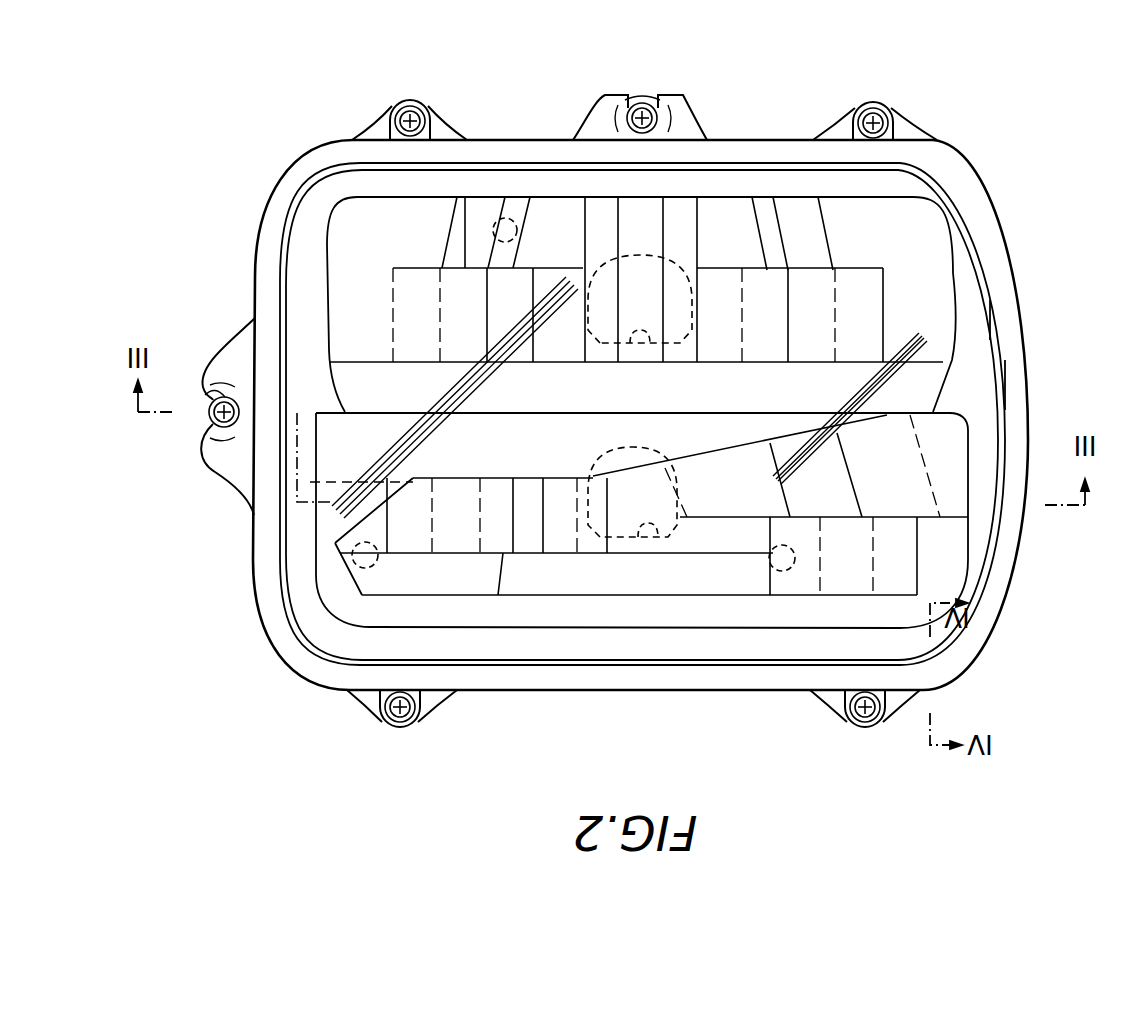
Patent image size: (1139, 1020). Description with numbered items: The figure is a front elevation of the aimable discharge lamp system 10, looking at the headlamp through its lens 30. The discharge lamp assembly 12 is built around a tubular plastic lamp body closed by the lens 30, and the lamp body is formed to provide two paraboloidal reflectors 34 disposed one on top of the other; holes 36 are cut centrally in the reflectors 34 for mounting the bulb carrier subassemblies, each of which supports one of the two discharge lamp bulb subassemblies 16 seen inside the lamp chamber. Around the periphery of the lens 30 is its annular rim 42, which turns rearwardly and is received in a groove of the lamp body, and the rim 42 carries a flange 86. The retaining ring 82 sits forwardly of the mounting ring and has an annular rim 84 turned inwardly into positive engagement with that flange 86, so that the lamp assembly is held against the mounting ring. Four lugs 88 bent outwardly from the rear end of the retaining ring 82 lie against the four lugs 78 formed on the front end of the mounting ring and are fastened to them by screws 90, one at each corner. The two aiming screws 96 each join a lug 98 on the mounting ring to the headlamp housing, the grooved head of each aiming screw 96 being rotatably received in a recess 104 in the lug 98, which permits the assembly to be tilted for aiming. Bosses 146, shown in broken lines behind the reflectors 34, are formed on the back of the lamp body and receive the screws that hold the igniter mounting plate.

The discharge lamp system 10 is at (250, 700).
The discharge lamp assembly 12 is at (307, 605).
The discharge lamp bulb subassemblies 16 is at (678, 267).
The lens 30 is at (940, 278).
The paraboloidal reflectors 34 is at (320, 248).
The holes 36 is at (650, 345).
The annular rim 42 is at (985, 318).
The lugs 78 is at (375, 130).
The retaining ring 82 is at (567, 692).
The annular rim 84 is at (643, 672).
The flange 86 is at (590, 130).
The lugs 88 is at (432, 118).
The screws 90 is at (410, 106).
The aiming screws 96 is at (643, 100).
The lugs 98 is at (228, 480).
The recess 104 is at (650, 103).
The bosses 146 is at (493, 230).